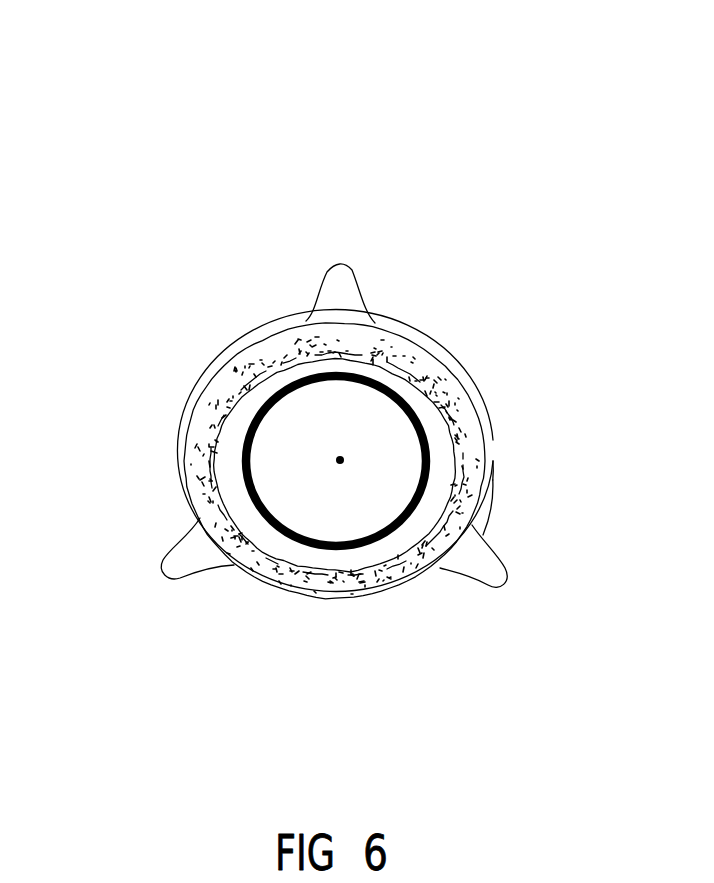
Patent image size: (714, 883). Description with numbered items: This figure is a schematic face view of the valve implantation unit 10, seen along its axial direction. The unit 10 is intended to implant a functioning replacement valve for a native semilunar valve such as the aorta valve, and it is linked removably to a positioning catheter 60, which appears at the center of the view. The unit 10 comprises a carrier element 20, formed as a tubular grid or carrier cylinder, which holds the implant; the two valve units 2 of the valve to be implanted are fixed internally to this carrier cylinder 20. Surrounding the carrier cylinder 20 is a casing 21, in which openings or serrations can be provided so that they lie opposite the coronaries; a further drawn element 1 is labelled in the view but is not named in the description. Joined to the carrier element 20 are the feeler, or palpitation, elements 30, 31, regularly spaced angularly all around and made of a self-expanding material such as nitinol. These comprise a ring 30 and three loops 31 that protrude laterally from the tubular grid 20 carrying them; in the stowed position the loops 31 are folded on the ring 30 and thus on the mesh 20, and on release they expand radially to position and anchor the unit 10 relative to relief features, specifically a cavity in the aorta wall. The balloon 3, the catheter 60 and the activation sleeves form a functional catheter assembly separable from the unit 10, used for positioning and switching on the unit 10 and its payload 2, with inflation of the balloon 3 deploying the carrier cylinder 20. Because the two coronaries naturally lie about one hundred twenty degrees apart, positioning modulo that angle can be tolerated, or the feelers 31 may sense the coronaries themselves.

The valve implantation unit 10 is at (538, 140).
The housing body 1 is at (223, 387).
The valve units 2 is at (488, 422).
The balloon 3 is at (350, 547).
The carrier element 20 is at (493, 458).
The casing 21 is at (492, 495).
The ring 30 is at (442, 362).
The loops 31 is at (360, 283).
The positioning catheter 60 is at (338, 462).